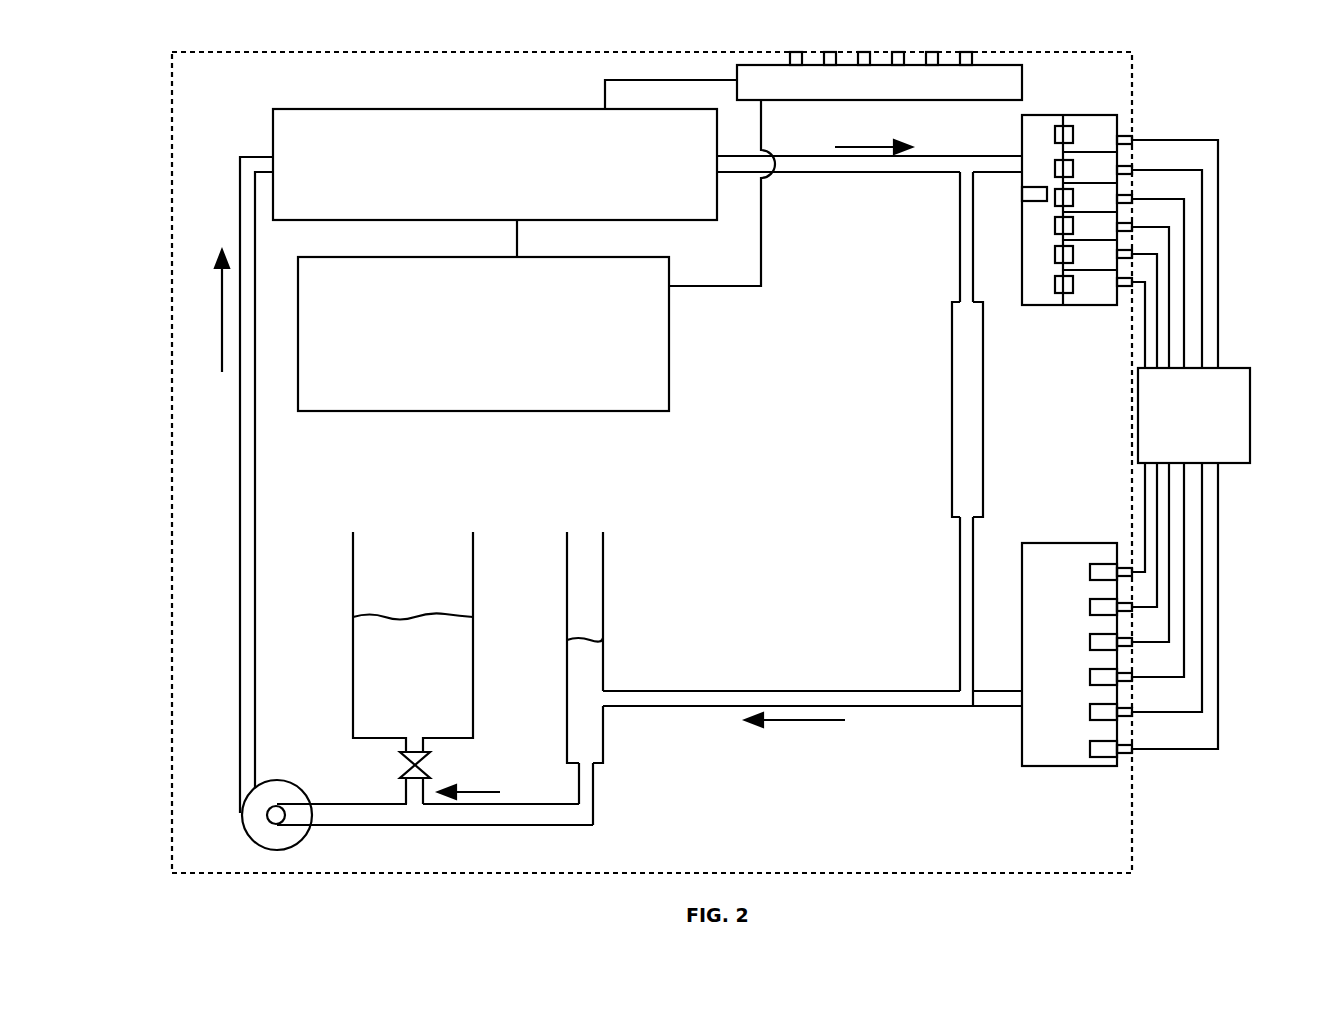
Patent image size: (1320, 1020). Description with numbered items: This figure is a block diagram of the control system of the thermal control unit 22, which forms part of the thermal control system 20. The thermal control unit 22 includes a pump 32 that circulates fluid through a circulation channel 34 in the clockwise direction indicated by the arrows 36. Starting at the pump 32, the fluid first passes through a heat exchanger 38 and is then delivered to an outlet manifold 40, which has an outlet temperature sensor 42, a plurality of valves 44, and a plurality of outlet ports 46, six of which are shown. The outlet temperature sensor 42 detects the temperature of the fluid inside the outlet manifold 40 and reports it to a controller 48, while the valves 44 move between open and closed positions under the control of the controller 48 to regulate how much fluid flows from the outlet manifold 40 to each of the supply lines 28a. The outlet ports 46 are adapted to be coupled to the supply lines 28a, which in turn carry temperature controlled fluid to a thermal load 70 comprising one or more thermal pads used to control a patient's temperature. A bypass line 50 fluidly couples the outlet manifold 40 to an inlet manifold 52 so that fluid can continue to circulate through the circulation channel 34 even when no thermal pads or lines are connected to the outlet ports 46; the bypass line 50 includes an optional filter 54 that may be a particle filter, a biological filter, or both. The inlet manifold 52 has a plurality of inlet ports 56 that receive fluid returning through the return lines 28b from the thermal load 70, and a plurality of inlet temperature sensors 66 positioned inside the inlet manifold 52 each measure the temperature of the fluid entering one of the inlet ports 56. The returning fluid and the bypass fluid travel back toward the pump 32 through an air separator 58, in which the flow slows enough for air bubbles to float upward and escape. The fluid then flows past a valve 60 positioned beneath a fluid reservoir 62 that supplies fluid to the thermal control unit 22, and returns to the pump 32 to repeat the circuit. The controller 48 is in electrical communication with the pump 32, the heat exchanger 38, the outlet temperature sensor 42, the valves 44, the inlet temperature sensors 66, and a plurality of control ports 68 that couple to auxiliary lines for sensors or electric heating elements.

The thermal control system 20 is at (94, 46).
The thermal control unit 22 is at (220, 878).
The supply lines 28a is at (1218, 230).
The return lines 28b is at (1145, 493).
The pump 32 is at (302, 832).
The circulation channel 34 is at (812, 172).
The arrows 36 is at (866, 147).
The heat exchanger 38 is at (412, 109).
The outlet manifold 40 is at (1022, 272).
The outlet temperature sensor 42 is at (1030, 195).
The valves 44 is at (1073, 135).
The outlet ports 46 is at (1128, 136).
The controller 48 is at (669, 368).
The bypass line 50 is at (960, 212).
The inlet manifold 52 is at (1048, 767).
The filter 54 is at (983, 450).
The inlet ports 56 is at (1126, 568).
The air separator 58 is at (603, 588).
The valve 60 is at (430, 763).
The fluid reservoir 62 is at (353, 557).
The inlet temperature sensors 66 is at (1090, 573).
The control ports 68 is at (797, 50).
The thermal load 70 is at (1233, 410).